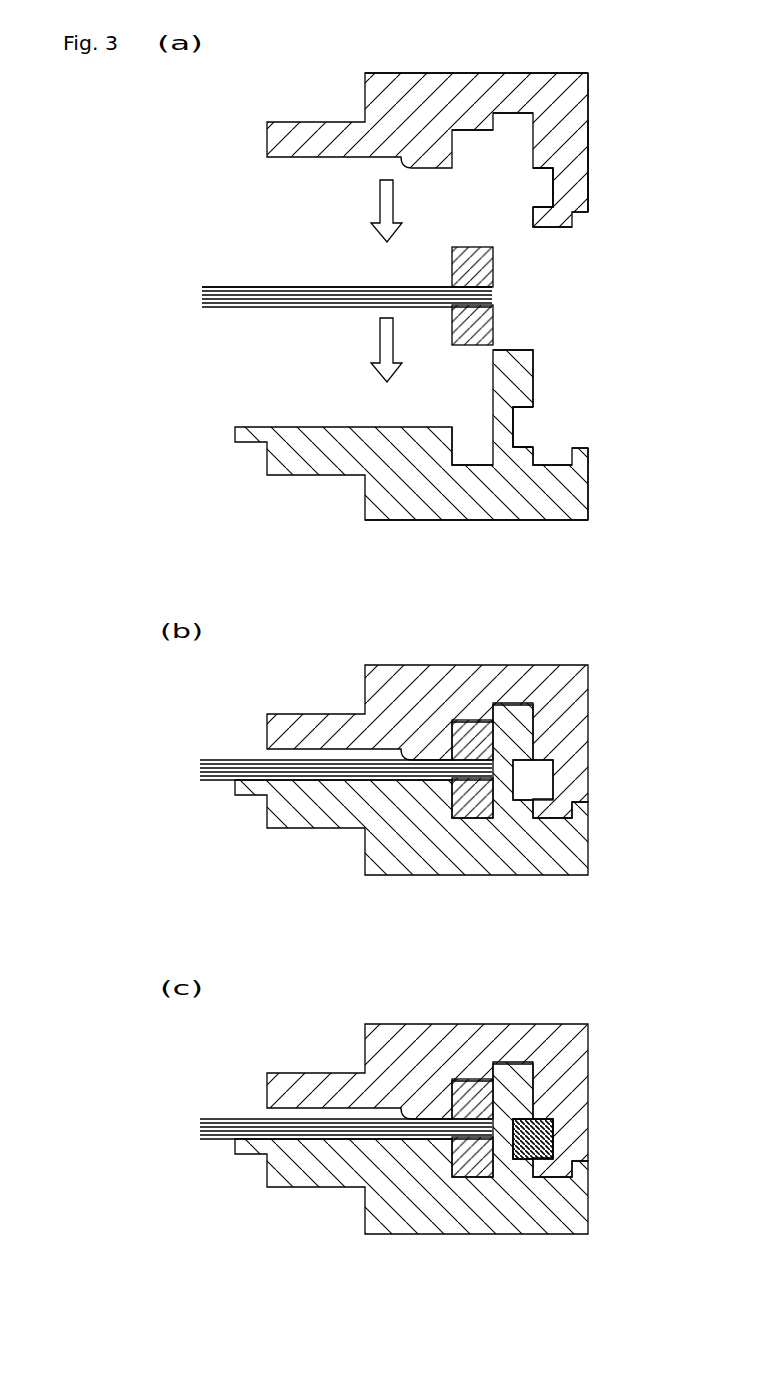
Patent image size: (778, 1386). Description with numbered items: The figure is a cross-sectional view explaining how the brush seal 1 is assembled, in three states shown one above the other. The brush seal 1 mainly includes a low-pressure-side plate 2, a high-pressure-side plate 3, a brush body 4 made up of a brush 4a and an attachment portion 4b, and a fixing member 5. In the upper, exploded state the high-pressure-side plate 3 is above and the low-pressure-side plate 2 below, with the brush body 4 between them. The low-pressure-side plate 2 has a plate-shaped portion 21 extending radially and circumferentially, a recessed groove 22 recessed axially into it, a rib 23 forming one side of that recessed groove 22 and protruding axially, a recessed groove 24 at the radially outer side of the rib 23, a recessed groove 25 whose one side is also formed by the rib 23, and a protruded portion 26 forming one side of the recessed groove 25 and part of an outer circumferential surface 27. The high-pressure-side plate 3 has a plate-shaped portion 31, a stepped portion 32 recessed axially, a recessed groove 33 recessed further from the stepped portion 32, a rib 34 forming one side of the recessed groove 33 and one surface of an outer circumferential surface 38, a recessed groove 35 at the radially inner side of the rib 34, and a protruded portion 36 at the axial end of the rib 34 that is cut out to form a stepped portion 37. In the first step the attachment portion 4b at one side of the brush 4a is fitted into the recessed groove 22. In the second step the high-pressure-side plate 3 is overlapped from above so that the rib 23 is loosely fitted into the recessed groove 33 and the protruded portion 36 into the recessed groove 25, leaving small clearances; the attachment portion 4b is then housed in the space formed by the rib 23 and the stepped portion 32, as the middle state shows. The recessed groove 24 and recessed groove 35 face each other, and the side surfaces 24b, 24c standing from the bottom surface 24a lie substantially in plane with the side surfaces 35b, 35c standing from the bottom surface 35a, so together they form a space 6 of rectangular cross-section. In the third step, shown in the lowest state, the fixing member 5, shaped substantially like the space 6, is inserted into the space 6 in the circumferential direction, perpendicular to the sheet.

The brush seal 1 is at (641, 710).
The low-pressure-side plate 2 is at (315, 494).
The high-pressure-side plate 3 is at (325, 100).
The brush body 4 is at (244, 271).
The brush 4a is at (303, 287).
The attachment portion 4b is at (458, 268).
The fixing member 5 is at (553, 1143).
The space 6 is at (542, 777).
The plate-shaped portion 21 is at (412, 498).
The recessed groove 22 is at (474, 445).
The rib 23 is at (528, 364).
The recessed groove 24 is at (528, 420).
The bottom surface 24a is at (515, 432).
The side surface 24b is at (517, 440).
The side surface 24c is at (528, 410).
The recessed groove 25 is at (551, 456).
The protruded portion 26 is at (578, 457).
The outer circumferential surface 27 is at (589, 502).
The plate-shaped portion 31 is at (405, 92).
The stepped portion 32 is at (465, 142).
The recessed groove 33 is at (505, 126).
The rib 34 is at (577, 103).
The recessed groove 35 is at (532, 180).
The bottom surface 35a is at (552, 194).
The side surface 35b is at (552, 208).
The side surface 35c is at (645, 224).
The protruded portion 36 is at (546, 224).
The stepped portion 37 is at (586, 230).
The outer circumferential surface 38 is at (590, 149).